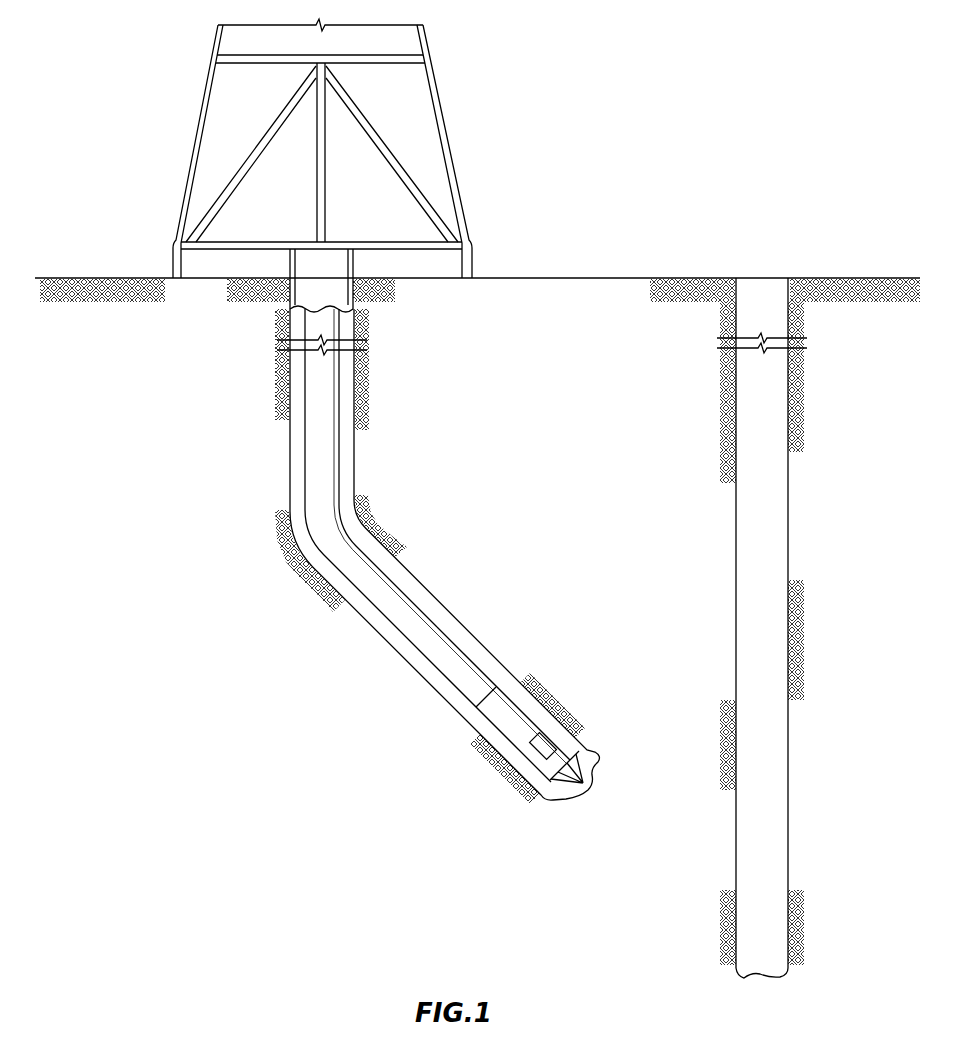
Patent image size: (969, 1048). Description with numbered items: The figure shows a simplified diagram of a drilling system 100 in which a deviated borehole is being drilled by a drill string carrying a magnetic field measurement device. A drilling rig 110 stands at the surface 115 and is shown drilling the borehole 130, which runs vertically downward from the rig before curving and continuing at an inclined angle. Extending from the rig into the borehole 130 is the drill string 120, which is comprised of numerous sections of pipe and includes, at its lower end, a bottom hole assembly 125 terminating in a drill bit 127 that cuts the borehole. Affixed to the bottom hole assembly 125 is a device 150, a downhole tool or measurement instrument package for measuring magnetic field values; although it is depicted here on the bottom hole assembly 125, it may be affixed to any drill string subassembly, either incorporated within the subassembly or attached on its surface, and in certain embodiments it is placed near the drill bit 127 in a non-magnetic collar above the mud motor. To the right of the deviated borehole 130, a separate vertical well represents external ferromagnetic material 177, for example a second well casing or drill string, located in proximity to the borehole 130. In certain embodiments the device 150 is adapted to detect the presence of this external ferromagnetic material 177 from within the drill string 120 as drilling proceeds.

The drilling system 100 is at (580, 685).
The drilling rig 110 is at (437, 78).
The surface 115 is at (670, 278).
The drill string 120 is at (305, 443).
The bottom hole assembly 125 is at (508, 680).
The drill bit 127 is at (562, 798).
The borehole 130 is at (357, 620).
The device 150 is at (530, 740).
The external ferromagnetic material 177 is at (788, 533).